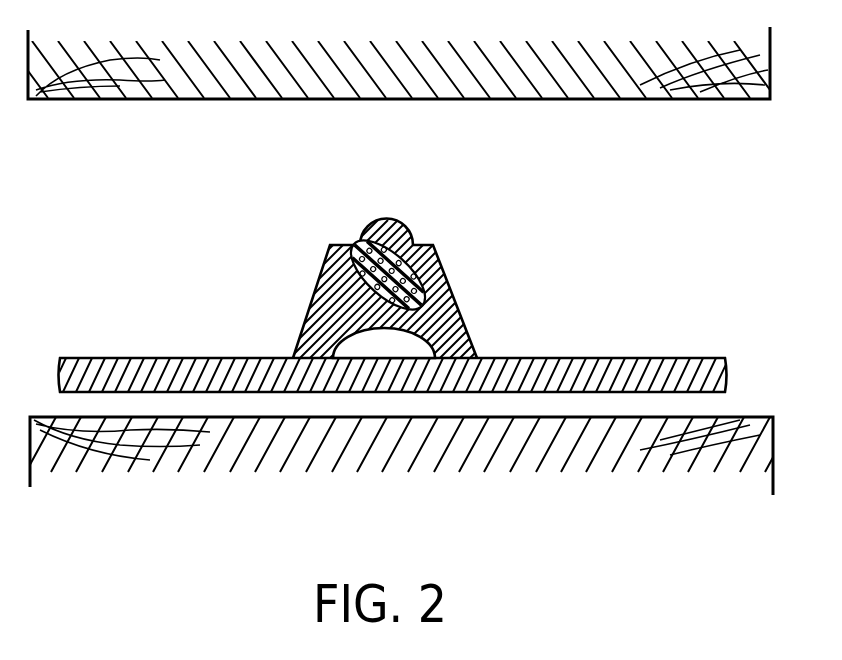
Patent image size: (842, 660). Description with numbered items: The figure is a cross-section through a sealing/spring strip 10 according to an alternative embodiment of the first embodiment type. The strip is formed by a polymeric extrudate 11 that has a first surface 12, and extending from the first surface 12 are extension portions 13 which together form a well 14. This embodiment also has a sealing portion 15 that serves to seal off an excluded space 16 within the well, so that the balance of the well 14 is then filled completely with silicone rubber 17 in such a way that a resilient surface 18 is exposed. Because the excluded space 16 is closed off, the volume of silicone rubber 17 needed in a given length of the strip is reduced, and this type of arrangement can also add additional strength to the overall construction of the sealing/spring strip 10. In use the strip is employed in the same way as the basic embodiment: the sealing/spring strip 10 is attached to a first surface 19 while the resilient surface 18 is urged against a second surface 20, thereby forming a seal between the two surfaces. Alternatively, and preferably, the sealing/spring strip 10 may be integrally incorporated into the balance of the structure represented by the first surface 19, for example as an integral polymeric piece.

The sealing/spring strip 10 is at (575, 262).
The polymeric extrudate 11 is at (706, 347).
The first surface 12 is at (638, 357).
The extension portions 13 is at (440, 251).
The well 14 is at (392, 206).
The sealing portion 15 is at (443, 290).
The excluded space 16 is at (410, 350).
The silicone rubber 17 is at (360, 241).
The resilient surface 18 is at (382, 218).
The first surface 19 is at (750, 416).
The second surface 20 is at (697, 100).